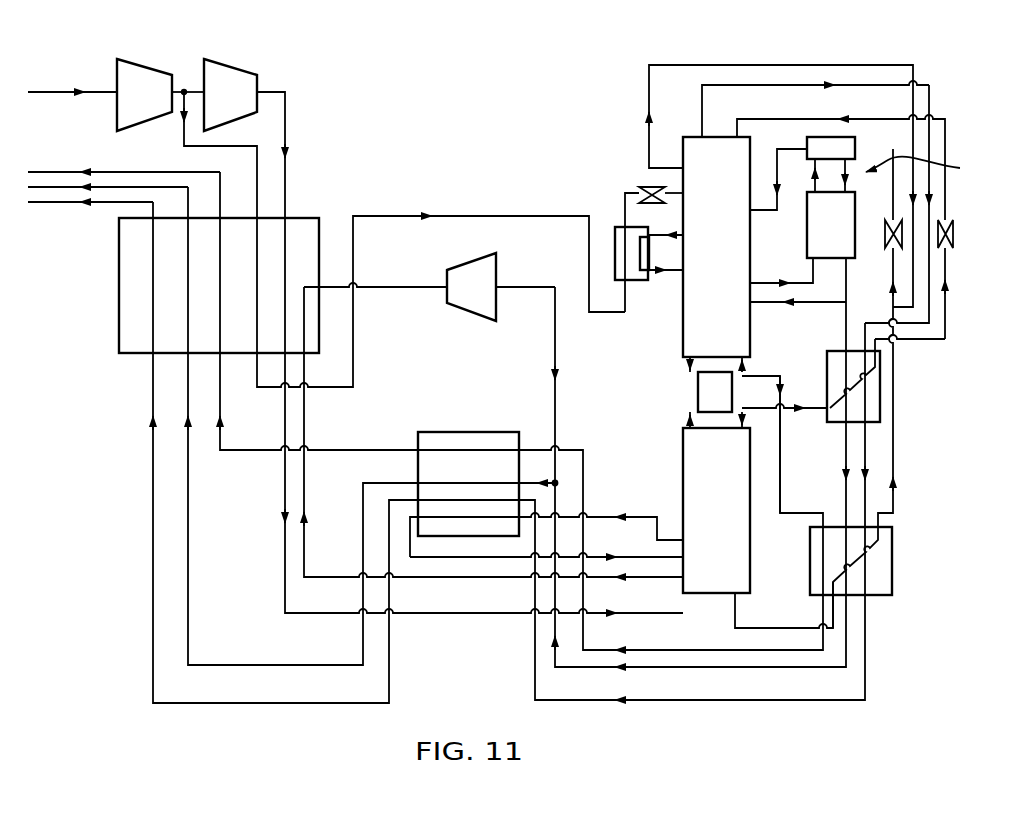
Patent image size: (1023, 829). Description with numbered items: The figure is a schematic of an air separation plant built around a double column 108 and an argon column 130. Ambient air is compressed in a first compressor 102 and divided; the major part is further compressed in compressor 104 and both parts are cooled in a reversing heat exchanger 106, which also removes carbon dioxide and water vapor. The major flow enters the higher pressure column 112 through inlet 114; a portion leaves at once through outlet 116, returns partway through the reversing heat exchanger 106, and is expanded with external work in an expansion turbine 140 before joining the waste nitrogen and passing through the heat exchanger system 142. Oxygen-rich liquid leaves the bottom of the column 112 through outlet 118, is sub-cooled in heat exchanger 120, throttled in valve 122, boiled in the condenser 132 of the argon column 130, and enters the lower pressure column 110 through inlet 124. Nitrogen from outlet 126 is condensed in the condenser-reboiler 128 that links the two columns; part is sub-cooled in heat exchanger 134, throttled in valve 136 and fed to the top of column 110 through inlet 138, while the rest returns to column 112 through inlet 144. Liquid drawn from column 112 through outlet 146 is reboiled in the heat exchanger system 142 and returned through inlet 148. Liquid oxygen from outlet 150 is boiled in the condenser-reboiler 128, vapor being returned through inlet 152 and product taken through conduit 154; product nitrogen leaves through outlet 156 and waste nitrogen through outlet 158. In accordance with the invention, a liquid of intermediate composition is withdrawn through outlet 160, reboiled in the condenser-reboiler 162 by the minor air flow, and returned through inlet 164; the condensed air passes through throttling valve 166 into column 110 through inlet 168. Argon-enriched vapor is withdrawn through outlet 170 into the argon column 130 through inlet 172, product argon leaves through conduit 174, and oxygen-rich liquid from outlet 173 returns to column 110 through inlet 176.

The first compressor 102 is at (156, 110).
The compressor 104 is at (242, 110).
The reversing heat exchanger 106 is at (119, 287).
The double column 108 is at (660, 355).
The lower pressure column 110 is at (731, 333).
The higher pressure column 112 is at (729, 509).
The inlet 114 is at (698, 595).
The outlet 116 is at (670, 587).
The outlet 118 is at (738, 597).
The heat exchanger 120 is at (892, 577).
The throttling valve 122 is at (902, 219).
The inlet 124 is at (752, 210).
The outlet 126 is at (690, 424).
The condenser-reboiler 128 is at (705, 390).
The argon column 130 is at (846, 242).
The condenser 132 is at (822, 138).
The heat exchanger 134 is at (878, 400).
The throttling valve 136 is at (953, 233).
The inlet 138 is at (735, 135).
The expansion turbine 140 is at (488, 303).
The heat exchanger system 142 is at (470, 432).
The inlet 144 is at (743, 420).
The outlet 146 is at (636, 516).
The inlet 148 is at (670, 548).
The outlet 150 is at (688, 362).
The inlet 152 is at (745, 369).
The conduit 154 is at (790, 380).
The outlet 156 is at (700, 133).
The outlet 158 is at (682, 168).
The outlet 160 is at (680, 233).
The condenser-reboiler 162 is at (615, 247).
The inlet 164 is at (680, 272).
The throttling valve 166 is at (638, 192).
The inlet 168 is at (673, 192).
The outlet 170 is at (752, 283).
The inlet 172 is at (815, 260).
The outlet 173 is at (850, 260).
The conduit 174 is at (929, 169).
The inlet 176 is at (752, 303).